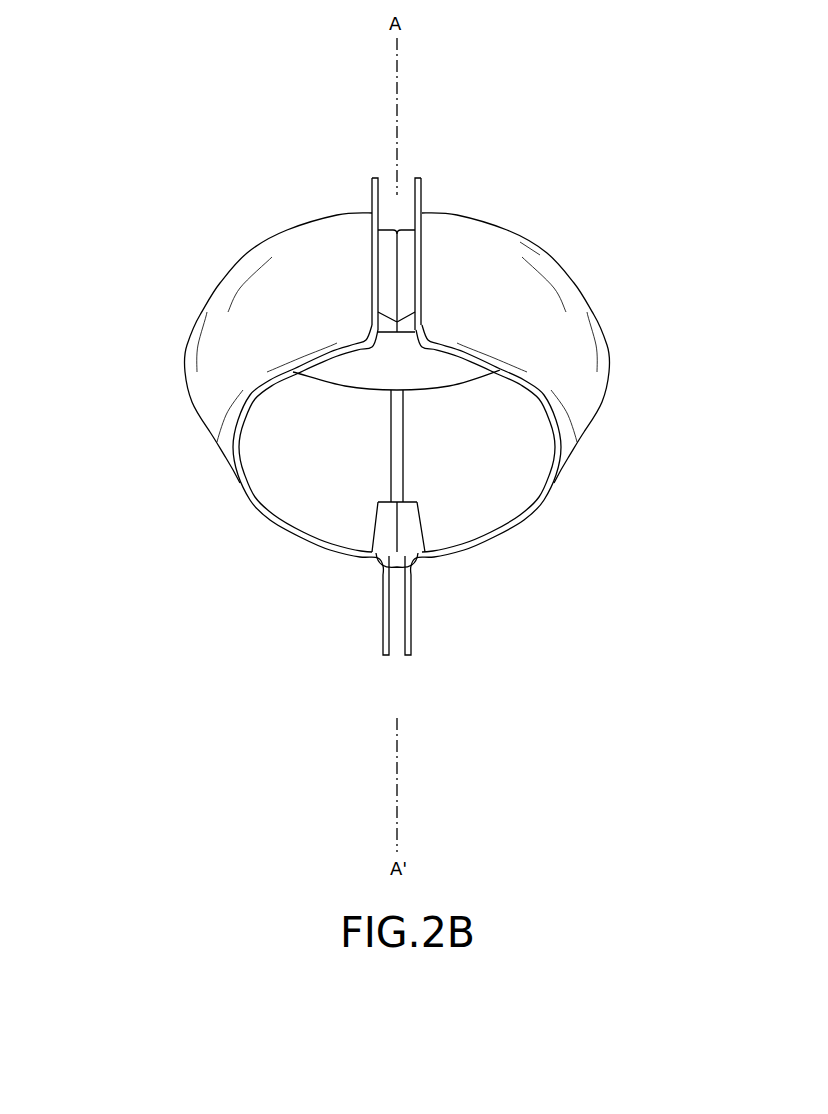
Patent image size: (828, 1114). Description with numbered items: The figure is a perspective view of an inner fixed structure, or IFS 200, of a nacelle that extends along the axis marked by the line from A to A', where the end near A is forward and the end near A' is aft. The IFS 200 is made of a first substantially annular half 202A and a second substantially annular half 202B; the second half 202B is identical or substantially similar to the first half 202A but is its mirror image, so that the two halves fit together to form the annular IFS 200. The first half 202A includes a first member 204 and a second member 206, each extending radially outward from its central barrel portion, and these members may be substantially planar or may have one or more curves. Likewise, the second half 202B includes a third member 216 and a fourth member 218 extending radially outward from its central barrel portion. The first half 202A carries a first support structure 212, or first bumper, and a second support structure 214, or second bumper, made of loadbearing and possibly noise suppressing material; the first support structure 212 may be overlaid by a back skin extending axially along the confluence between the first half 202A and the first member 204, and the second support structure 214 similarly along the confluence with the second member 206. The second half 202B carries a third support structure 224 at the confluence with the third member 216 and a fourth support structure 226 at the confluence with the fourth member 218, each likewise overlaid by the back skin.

The IFS 200 is at (202, 35).
The first half 202A is at (547, 286).
The second half 202B is at (231, 341).
The first member 204 is at (422, 194).
The second member 206 is at (415, 602).
The first support structure 212 is at (422, 293).
The second support structure 214 is at (418, 475).
The third member 216 is at (372, 194).
The fourth member 218 is at (383, 602).
The third support structure 224 is at (372, 297).
The fourth support structure 226 is at (385, 468).